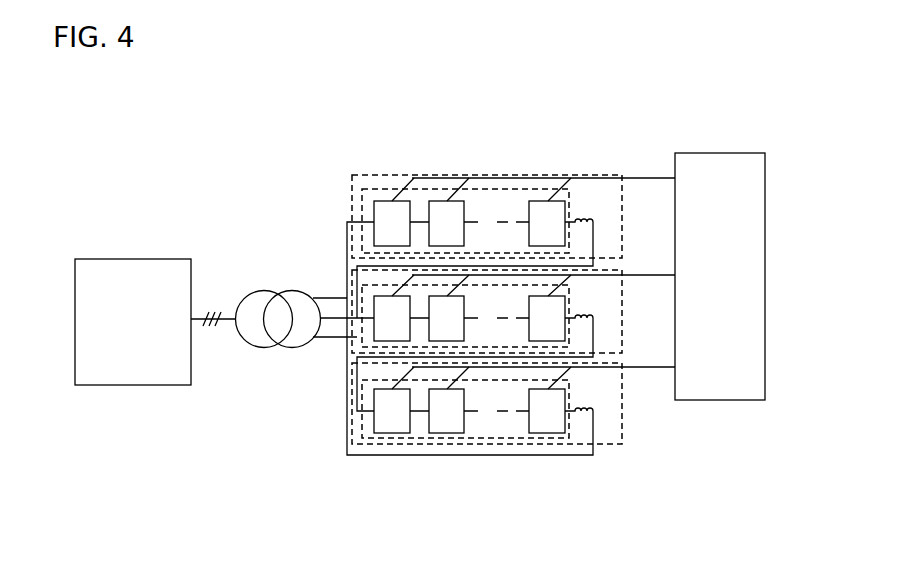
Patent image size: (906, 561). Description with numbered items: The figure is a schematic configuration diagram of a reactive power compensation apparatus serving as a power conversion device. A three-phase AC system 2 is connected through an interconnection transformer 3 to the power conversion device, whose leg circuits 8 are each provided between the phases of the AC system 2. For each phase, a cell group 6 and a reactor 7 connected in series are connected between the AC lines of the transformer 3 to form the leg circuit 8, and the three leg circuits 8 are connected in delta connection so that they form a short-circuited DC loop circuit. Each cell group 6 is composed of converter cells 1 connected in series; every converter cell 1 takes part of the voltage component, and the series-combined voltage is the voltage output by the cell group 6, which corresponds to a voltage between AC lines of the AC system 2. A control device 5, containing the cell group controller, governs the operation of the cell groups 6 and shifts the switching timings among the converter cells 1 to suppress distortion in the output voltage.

The converter cell 1 is at (382, 201).
The AC system 2 is at (127, 259).
The interconnection transformer 3 is at (257, 291).
The control device 5 is at (709, 153).
The cell group 6 is at (362, 207).
The reactor 7 is at (583, 218).
The leg circuit 8 is at (479, 175).